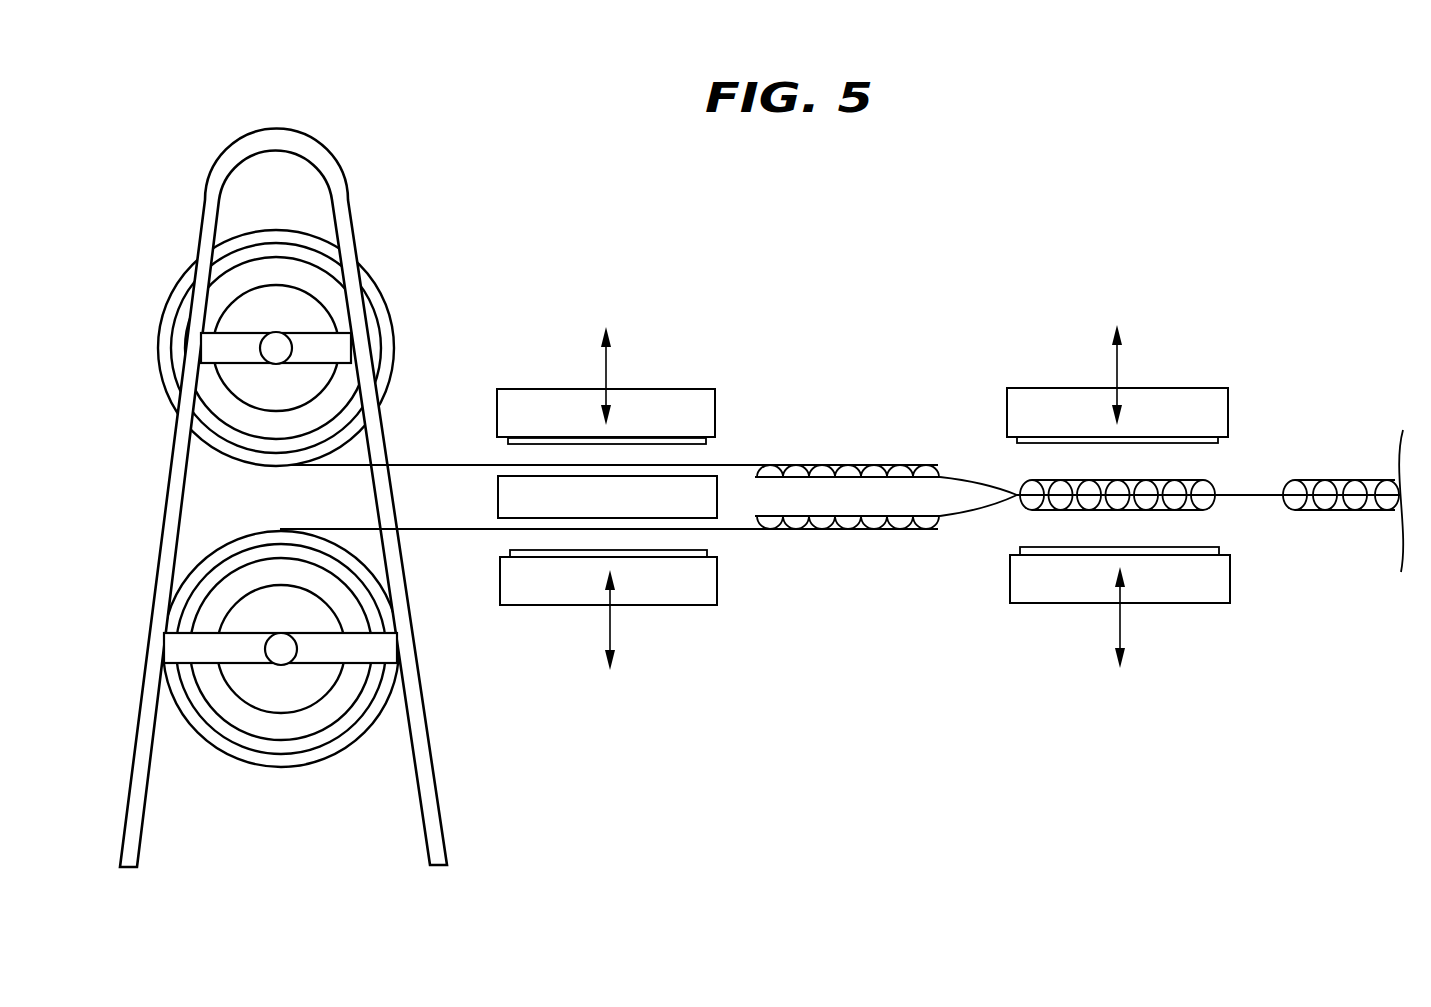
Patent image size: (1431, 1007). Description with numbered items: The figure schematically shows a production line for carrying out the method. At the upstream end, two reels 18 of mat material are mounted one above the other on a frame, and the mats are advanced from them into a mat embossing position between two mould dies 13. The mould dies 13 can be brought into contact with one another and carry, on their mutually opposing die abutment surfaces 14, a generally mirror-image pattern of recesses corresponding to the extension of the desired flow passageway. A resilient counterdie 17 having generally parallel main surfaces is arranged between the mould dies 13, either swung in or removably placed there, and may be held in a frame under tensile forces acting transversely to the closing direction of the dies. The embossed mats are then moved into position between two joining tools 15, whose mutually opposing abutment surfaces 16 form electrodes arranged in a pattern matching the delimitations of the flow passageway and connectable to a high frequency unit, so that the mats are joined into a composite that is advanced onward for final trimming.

The mould dies 13 is at (672, 400).
The die abutment surfaces 14 is at (520, 443).
The joining tools 15 is at (1043, 408).
The abutment surfaces 16 is at (1027, 438).
The resilient counterdie 17 is at (705, 493).
The reels 18 is at (393, 267).